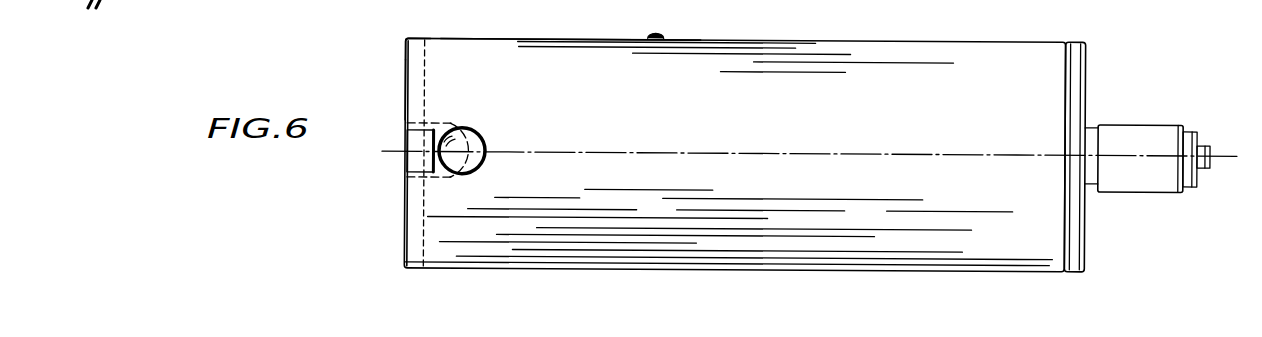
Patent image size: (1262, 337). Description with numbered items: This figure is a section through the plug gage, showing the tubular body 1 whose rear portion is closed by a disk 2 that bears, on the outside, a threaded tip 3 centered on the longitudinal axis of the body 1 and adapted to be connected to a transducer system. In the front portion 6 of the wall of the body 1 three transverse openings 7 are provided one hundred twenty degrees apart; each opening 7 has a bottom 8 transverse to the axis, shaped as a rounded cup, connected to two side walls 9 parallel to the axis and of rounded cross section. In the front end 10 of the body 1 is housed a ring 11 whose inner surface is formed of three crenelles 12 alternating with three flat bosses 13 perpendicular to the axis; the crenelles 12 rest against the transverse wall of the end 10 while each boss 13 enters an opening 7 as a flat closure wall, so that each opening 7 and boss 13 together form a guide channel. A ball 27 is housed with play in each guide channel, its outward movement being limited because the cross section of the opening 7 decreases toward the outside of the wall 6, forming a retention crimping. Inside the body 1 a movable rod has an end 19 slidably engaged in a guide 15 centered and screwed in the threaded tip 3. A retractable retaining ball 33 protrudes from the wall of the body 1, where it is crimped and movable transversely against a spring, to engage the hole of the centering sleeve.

The tubular body 1 is at (953, 49).
The disk 2 is at (1077, 62).
The threaded tip 3 is at (1142, 131).
The front portion of the wall 6 is at (455, 37).
The transverse opening 7 is at (433, 178).
The bottom 8 is at (489, 158).
The side wall 9 is at (440, 122).
The front end 10 is at (412, 34).
The ring 11 is at (403, 77).
The crenelle 12 is at (423, 229).
The flat boss 13 is at (420, 160).
The guide 15 is at (1197, 128).
The end of the rod 19 is at (1213, 158).
The ball 27 is at (467, 144).
The retractable retaining ball 33 is at (668, 30).